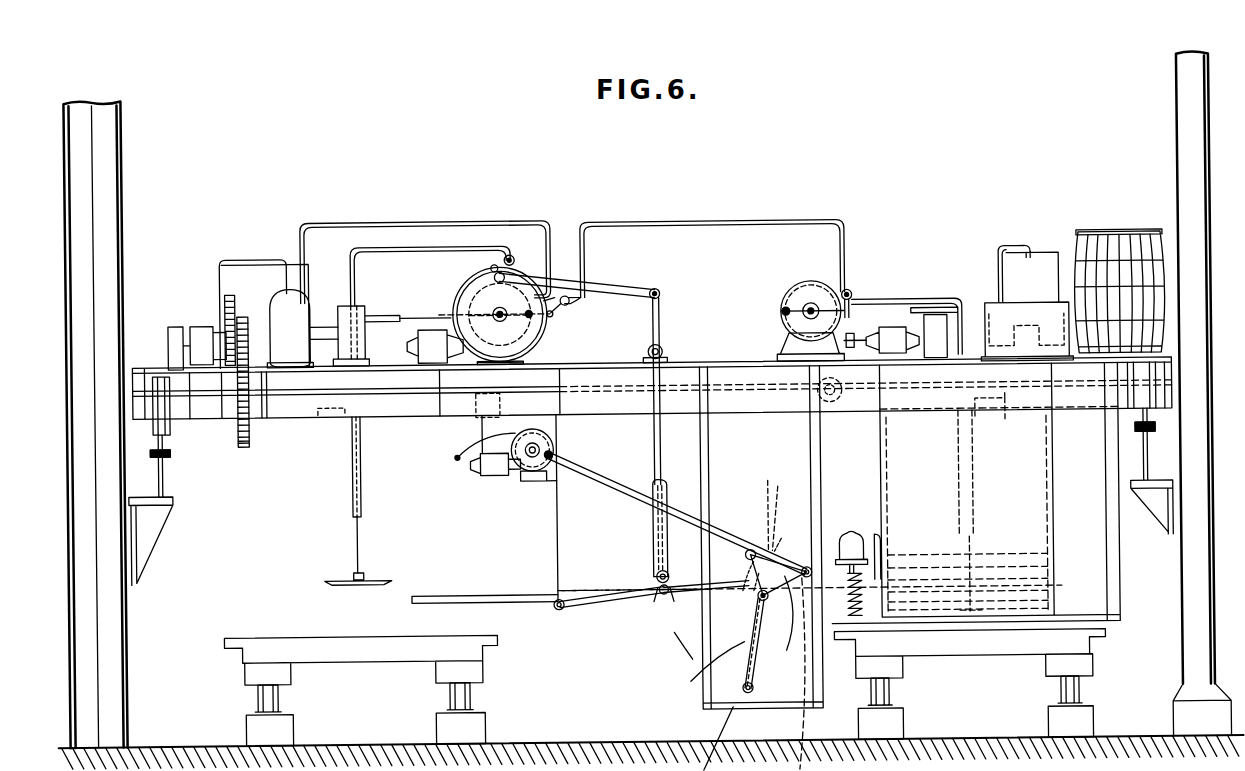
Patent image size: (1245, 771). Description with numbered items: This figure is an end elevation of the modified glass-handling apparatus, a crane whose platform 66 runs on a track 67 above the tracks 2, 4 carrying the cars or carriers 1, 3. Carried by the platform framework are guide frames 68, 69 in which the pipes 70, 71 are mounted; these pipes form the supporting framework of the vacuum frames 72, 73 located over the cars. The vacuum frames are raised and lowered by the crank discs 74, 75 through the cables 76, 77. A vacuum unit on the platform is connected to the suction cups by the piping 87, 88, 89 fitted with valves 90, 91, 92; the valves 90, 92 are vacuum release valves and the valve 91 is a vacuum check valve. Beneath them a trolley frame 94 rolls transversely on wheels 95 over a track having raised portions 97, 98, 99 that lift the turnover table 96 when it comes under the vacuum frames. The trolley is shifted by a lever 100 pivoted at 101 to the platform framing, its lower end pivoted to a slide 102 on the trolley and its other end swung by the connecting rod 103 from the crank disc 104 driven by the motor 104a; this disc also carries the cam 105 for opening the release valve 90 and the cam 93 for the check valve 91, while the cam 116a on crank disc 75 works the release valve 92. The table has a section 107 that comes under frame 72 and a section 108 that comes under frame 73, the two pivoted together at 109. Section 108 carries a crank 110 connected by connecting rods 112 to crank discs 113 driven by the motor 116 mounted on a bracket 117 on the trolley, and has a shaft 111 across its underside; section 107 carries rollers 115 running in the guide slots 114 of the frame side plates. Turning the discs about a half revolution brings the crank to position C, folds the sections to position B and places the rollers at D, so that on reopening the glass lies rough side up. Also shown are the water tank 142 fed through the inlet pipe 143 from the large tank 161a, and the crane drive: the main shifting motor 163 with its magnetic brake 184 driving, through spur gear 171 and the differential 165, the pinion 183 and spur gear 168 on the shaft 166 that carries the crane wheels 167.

The car or carrier 1 is at (1087, 650).
The track 2 is at (1078, 703).
The car or carrier 3 is at (250, 640).
The track 4 is at (262, 702).
The platform 66 is at (152, 368).
The track 67 is at (152, 470).
The guide frame 68 is at (352, 488).
The guide frame 69 is at (975, 488).
The pipe 70 is at (354, 545).
The pipe 71 is at (970, 536).
The vacuum frame 72 is at (340, 582).
The vacuum frame 73 is at (988, 622).
The crank disc 74 is at (494, 305).
The crank disc 75 is at (812, 302).
The cable 76 is at (421, 320).
The cable 77 is at (898, 302).
The piping 87 is at (318, 220).
The piping 88 is at (358, 324).
The piping 89 is at (748, 222).
The vacuum release valve 90 is at (516, 255).
The vacuum check valve 91 is at (570, 303).
The vacuum release valve 92 is at (852, 292).
The cam 93 is at (500, 366).
The trolley frame 94 is at (554, 563).
The wheel 95 is at (480, 418).
The turnover table 96 is at (718, 585).
The raised portion 97 is at (1008, 405).
The raised portion 98 is at (677, 400).
The raised portion 99 is at (325, 425).
The lever 100 is at (654, 463).
The pivot 101 is at (643, 349).
The slide 102 is at (652, 537).
The connecting rod 103 is at (636, 290).
The crank disc 104 is at (477, 293).
The motor 104a is at (385, 379).
The cam 105 is at (452, 303).
The table section 107 is at (441, 594).
The table section 108 is at (675, 586).
The pivot 109 is at (660, 602).
The crank 110 is at (790, 640).
The shaft 111 is at (738, 645).
The connecting rod 112 is at (620, 496).
The crank disc 113 is at (430, 472).
The guide slot 114 is at (604, 605).
The roller 115 is at (553, 610).
The motor 116 is at (495, 476).
The cam 116a is at (783, 315).
The bracket 117 is at (533, 476).
The tank 142 is at (978, 300).
The inlet pipe 143 is at (1116, 446).
The large tank 161a is at (1078, 240).
The main shifting motor 163 is at (226, 320).
The differential 165 is at (290, 288).
The shaft 166 is at (397, 397).
The crane wheel 167 is at (155, 455).
The spur gear 168 is at (248, 450).
The spur gear 171 is at (212, 256).
The pinion 183 is at (244, 318).
The magnetic brake 184 is at (183, 326).
The folded table position B is at (699, 669).
The crank position C is at (787, 540).
The roller position D is at (748, 552).